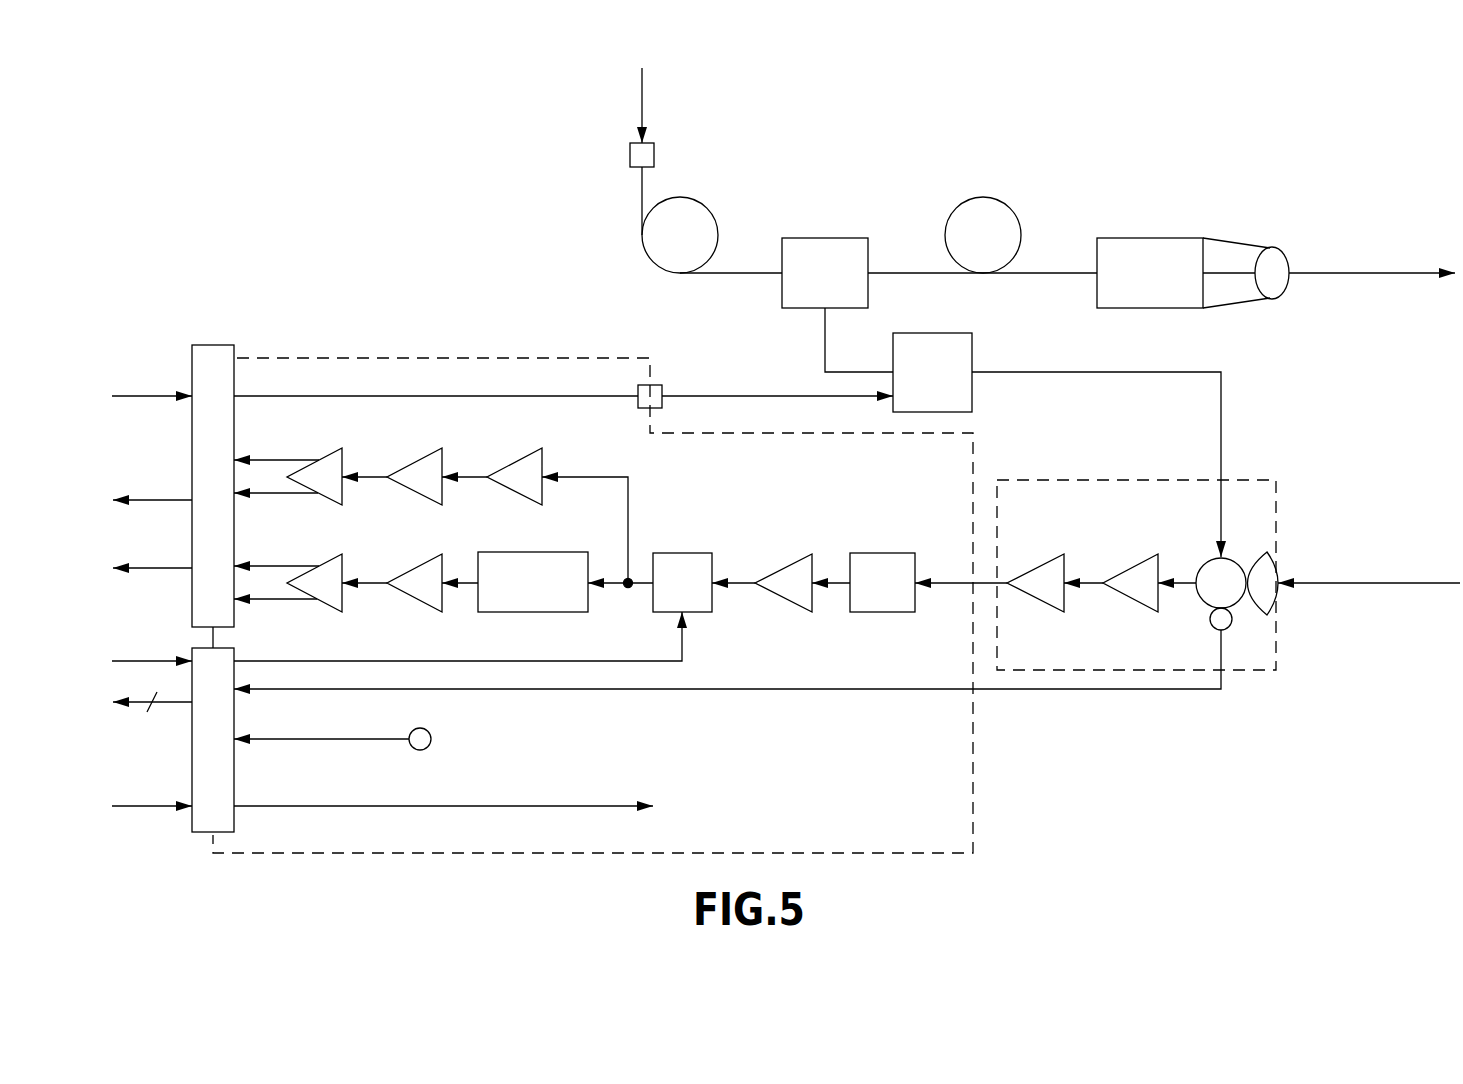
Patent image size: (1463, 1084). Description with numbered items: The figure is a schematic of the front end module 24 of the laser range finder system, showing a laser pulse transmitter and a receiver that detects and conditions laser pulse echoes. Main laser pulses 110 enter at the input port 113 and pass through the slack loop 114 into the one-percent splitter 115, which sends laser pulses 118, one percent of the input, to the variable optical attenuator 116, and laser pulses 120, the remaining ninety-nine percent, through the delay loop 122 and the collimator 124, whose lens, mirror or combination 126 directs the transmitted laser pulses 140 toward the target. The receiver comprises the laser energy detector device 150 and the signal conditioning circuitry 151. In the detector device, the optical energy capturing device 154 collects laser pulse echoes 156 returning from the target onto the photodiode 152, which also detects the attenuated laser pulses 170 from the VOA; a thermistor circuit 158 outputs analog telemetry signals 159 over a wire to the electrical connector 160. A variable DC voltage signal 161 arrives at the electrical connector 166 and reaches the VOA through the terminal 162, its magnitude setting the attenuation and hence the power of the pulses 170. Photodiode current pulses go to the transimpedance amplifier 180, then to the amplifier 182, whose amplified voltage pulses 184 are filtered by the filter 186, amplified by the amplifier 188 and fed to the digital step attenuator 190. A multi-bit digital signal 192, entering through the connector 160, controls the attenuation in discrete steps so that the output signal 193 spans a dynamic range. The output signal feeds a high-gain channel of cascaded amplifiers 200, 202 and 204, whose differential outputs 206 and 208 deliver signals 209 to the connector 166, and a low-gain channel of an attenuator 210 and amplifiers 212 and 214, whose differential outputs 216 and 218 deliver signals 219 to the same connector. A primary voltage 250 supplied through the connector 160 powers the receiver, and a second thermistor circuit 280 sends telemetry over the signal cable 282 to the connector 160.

The front end module 24 is at (958, 118).
The main laser pulses 110 is at (643, 93).
The input port 113 is at (638, 142).
The slack loop 114 is at (708, 209).
The one-percent splitter 115 is at (825, 238).
The variable optical attenuator 116 is at (972, 390).
The laser pulses 118 is at (825, 343).
The laser pulses 120 is at (897, 273).
The delay loop 122 is at (1011, 207).
The collimator 124 is at (1150, 238).
The lens, mirror or combination 126 is at (1289, 258).
The transmitted laser pulses 140 is at (1363, 274).
The laser energy detector device 150 is at (1140, 480).
The signal conditioning circuitry 151 is at (496, 358).
The photodiode 152 is at (1204, 565).
The optical energy capturing device 154 is at (1269, 562).
The laser pulse echoes 156 is at (1395, 584).
The thermistor circuit 158 is at (1210, 621).
The analog telemetry signals 159 is at (170, 703).
The electrical connector 160 is at (196, 832).
The variable DC voltage signal 161 is at (140, 396).
The terminal 162 is at (662, 401).
The electrical connector 166 is at (200, 343).
The laser pulses 170 is at (1033, 372).
The transimpedance amplifier 180 is at (1128, 570).
The amplifier 182 is at (1032, 570).
The amplified voltage pulses 184 is at (948, 584).
The filter 186 is at (883, 553).
The amplifier 188 is at (783, 567).
The digital step attenuator 190 is at (682, 553).
The multi-bit digital signal 192 is at (143, 661).
The output signal 193 is at (628, 588).
The amplifier 200 is at (545, 455).
The amplifier 202 is at (445, 452).
The amplifier 204 is at (345, 452).
The differential output 206 is at (276, 460).
The differential output 208 is at (275, 494).
The signals 209 is at (160, 500).
The attenuator 210 is at (572, 552).
The amplifier 212 is at (445, 556).
The amplifier 214 is at (345, 556).
The differential output 216 is at (302, 564).
The differential output 218 is at (280, 600).
The signals 219 is at (163, 568).
The primary voltage 250 is at (140, 806).
The thermistor circuit 280 is at (431, 739).
The signal cable 282 is at (335, 740).